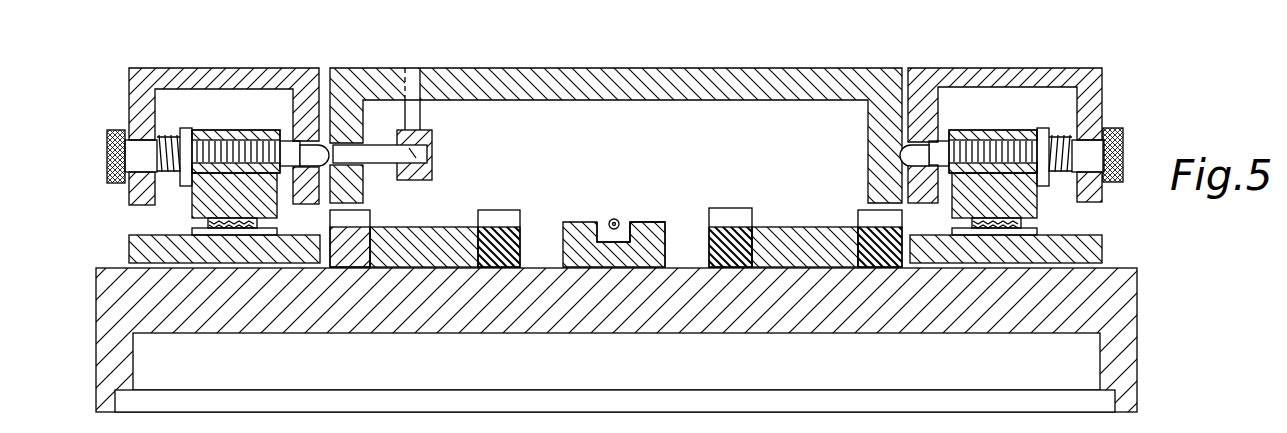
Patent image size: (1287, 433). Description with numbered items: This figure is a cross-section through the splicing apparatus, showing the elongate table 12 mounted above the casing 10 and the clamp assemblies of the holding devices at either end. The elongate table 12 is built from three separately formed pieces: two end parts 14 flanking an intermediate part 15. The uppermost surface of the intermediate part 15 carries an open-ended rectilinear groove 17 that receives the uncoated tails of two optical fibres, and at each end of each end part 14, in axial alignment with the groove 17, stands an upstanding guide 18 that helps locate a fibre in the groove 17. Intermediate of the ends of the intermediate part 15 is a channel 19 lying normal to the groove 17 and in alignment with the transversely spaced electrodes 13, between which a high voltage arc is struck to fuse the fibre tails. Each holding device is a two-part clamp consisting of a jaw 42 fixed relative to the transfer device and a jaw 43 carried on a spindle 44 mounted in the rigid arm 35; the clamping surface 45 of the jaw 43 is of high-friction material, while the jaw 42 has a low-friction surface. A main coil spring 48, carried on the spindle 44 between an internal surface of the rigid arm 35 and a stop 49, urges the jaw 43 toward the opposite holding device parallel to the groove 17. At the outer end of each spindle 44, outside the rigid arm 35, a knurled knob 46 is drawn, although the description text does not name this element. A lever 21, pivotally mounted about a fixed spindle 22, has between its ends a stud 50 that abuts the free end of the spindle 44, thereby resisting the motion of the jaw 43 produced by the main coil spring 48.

The casing 10 is at (1115, 310).
The elongate table 12 is at (450, 274).
The electrodes 13 is at (615, 219).
The end parts 14 is at (418, 245).
The intermediate part 15 is at (588, 250).
The rectilinear groove 17 is at (650, 222).
The upstanding guide 18 is at (352, 240).
The channel 19 is at (598, 222).
The lever 21 is at (432, 172).
The fixed spindle 22 is at (422, 112).
The rigid arm 35 is at (140, 80).
The jaw 42 is at (245, 236).
The jaw 43 is at (200, 193).
The spindle 44 is at (348, 178).
The clamping surface 45 is at (192, 215).
The knob 46 is at (115, 128).
The main coil spring 48 is at (170, 138).
The stop 49 is at (188, 135).
The stud 50 is at (414, 170).